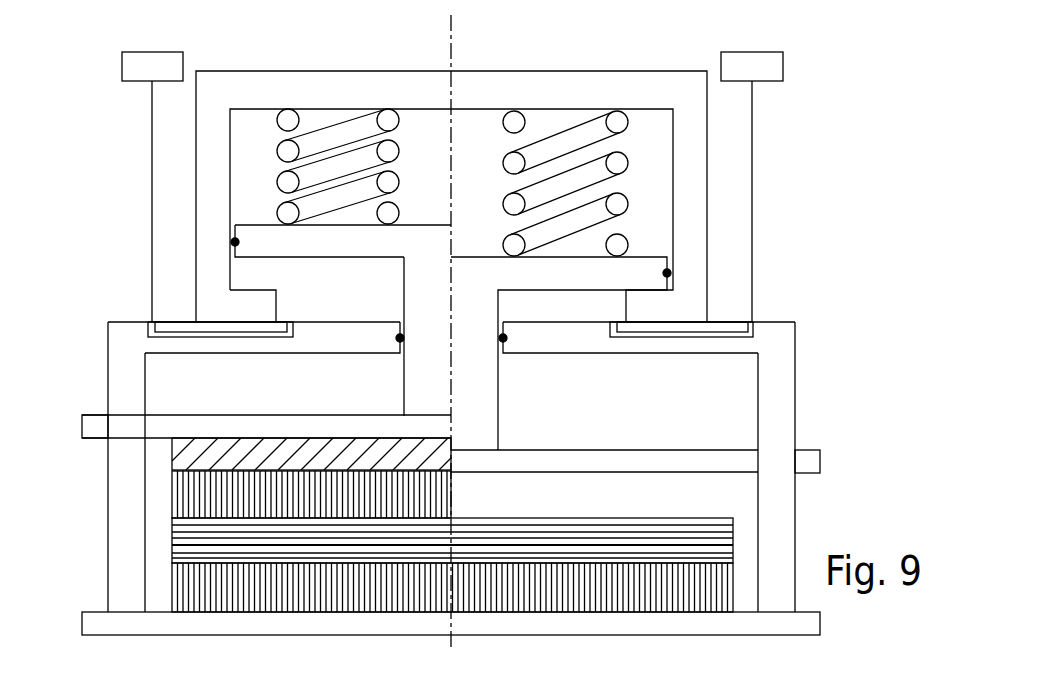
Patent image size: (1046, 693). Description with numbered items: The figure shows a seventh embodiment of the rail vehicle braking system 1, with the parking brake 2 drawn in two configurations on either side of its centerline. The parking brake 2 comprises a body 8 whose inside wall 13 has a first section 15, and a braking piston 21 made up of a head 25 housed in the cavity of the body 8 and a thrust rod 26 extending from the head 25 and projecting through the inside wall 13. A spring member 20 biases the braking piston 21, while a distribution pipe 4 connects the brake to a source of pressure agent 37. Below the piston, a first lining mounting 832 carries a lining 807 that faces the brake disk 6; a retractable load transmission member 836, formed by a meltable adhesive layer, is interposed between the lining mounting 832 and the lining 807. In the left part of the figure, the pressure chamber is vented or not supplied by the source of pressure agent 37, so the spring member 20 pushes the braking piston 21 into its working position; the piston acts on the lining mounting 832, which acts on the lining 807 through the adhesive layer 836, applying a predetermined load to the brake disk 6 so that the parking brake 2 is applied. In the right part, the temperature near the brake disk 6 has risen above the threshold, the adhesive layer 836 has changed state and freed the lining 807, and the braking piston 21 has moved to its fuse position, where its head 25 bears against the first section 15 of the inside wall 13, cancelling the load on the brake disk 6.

The rail vehicle braking system 1 is at (98, 169).
The parking brake 2 is at (122, 298).
The distribution pipe 4 is at (151, 130).
The brake disk 6 is at (192, 543).
The body 8 is at (272, 88).
The inside wall 13 is at (673, 322).
The first section 15 is at (650, 288).
The spring member 20 is at (340, 135).
The braking piston 21 is at (403, 274).
The head 25 is at (650, 265).
The thrust rod 26 is at (443, 320).
The source of pressure agent 37 is at (122, 68).
The lining 807 is at (192, 495).
The first lining mounting 832 is at (192, 428).
The retractable load transmission member 836 is at (192, 455).